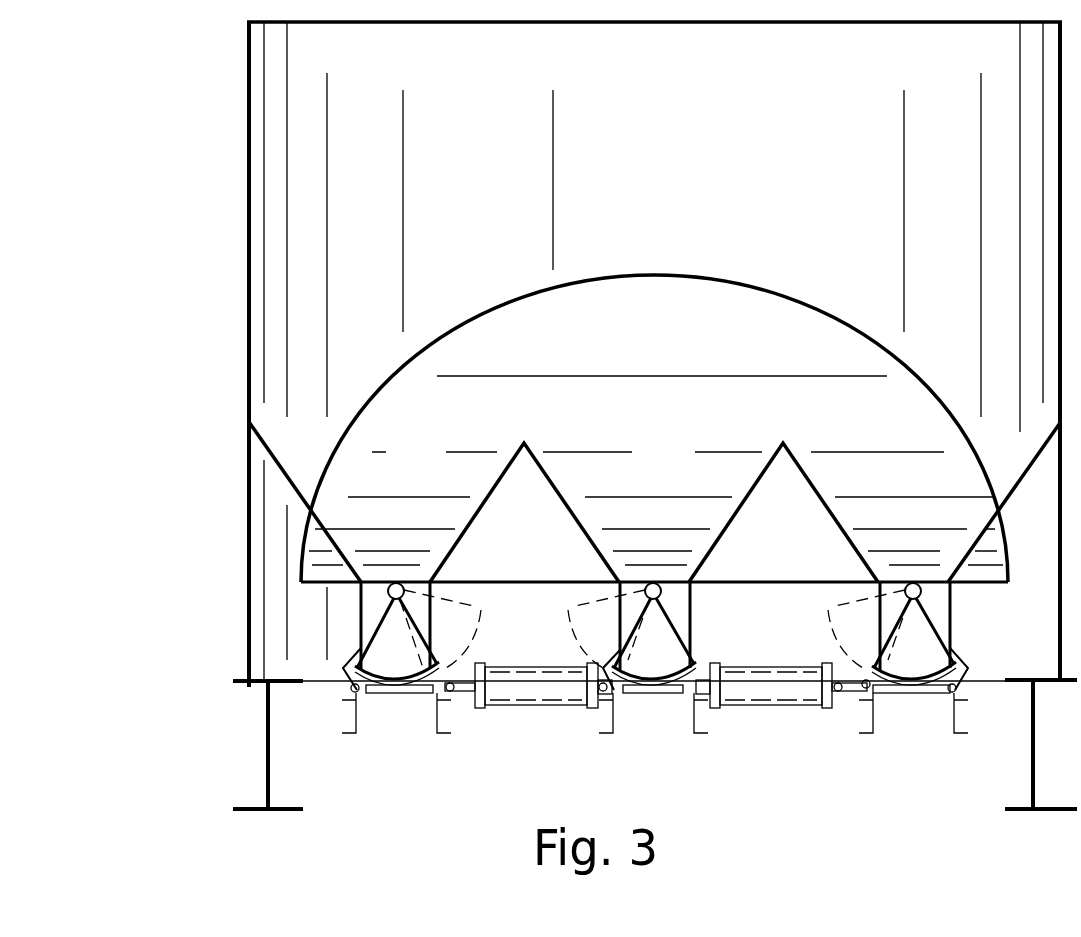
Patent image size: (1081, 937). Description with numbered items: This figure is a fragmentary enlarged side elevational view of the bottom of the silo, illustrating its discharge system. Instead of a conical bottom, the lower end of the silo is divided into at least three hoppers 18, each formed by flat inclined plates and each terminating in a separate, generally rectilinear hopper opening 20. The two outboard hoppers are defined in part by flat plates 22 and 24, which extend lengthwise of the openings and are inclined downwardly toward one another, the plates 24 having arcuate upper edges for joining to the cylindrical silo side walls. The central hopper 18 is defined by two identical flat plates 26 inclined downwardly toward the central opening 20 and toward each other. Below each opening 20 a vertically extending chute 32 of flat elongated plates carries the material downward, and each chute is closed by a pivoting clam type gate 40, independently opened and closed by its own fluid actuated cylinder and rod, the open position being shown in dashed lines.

The hopper 18 is at (923, 489).
The hopper opening 20 is at (361, 605).
The flat plate 22 is at (498, 487).
The flat plate 24 is at (283, 472).
The flat plate 26 is at (753, 490).
The chute 32 is at (360, 620).
The clam type gate 40 is at (330, 657).